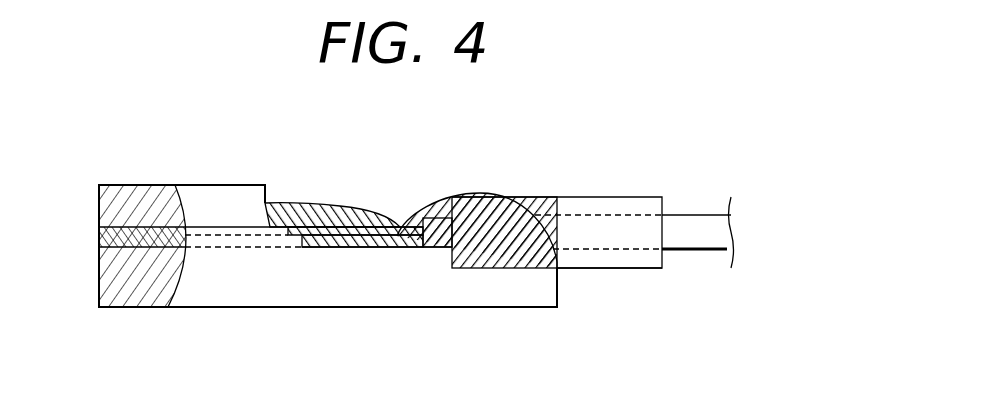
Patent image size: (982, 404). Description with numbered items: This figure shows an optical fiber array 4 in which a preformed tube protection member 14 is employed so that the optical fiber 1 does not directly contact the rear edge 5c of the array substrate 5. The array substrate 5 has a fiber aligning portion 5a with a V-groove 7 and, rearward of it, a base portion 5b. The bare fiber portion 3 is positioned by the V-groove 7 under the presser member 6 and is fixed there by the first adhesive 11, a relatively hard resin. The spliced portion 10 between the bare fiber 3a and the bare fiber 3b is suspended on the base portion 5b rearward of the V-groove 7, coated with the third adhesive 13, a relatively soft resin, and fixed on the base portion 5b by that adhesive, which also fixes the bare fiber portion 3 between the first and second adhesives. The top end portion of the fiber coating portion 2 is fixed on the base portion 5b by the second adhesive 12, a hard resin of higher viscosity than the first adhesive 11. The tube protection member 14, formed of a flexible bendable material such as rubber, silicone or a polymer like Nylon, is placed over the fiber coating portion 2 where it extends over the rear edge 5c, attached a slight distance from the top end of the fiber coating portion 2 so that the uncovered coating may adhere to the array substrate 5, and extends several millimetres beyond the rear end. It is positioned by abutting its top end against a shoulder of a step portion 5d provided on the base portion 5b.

The optical fiber 1 is at (576, 197).
The fiber coating portion 2 is at (692, 230).
The bare fiber portion 3 is at (283, 113).
The bare fiber 3a is at (322, 207).
The bare fiber 3b is at (185, 185).
The optical fiber array 4 is at (209, 317).
The array substrate 5 is at (307, 304).
The fiber aligning portion 5a is at (123, 303).
The base portion 5b is at (417, 250).
The rear edge 5c is at (563, 274).
The step portion 5d is at (466, 270).
The presser member 6 is at (133, 199).
The V-groove 7 is at (106, 246).
The spliced portion 10 is at (342, 240).
The first adhesive 11 is at (99, 231).
The second adhesive 12 is at (472, 195).
The third adhesive 13 is at (350, 207).
The tube protection member 14 is at (636, 260).